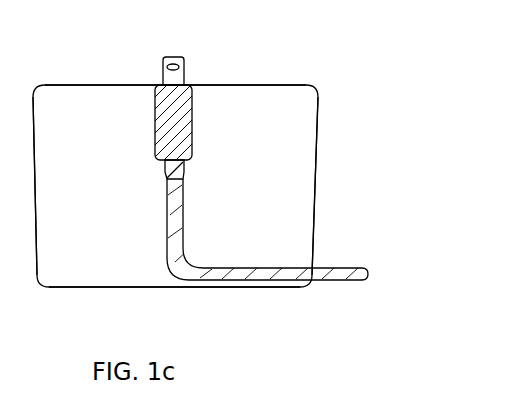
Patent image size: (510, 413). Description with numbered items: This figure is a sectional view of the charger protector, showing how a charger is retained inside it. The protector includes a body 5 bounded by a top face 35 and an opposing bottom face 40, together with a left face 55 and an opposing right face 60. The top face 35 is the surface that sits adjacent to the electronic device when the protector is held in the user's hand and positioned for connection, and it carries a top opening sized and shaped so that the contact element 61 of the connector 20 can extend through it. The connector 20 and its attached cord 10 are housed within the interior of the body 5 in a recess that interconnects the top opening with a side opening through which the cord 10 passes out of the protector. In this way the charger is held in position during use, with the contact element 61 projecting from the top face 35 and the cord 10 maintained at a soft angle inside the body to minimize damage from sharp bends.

The body 5 is at (307, 135).
The top face 35 is at (96, 85).
The left face 55 is at (34, 143).
The bottom face 40 is at (140, 287).
The right face 60 is at (315, 207).
The connector 20 is at (193, 105).
The contact element 61 is at (163, 56).
The cable 10 is at (335, 268).